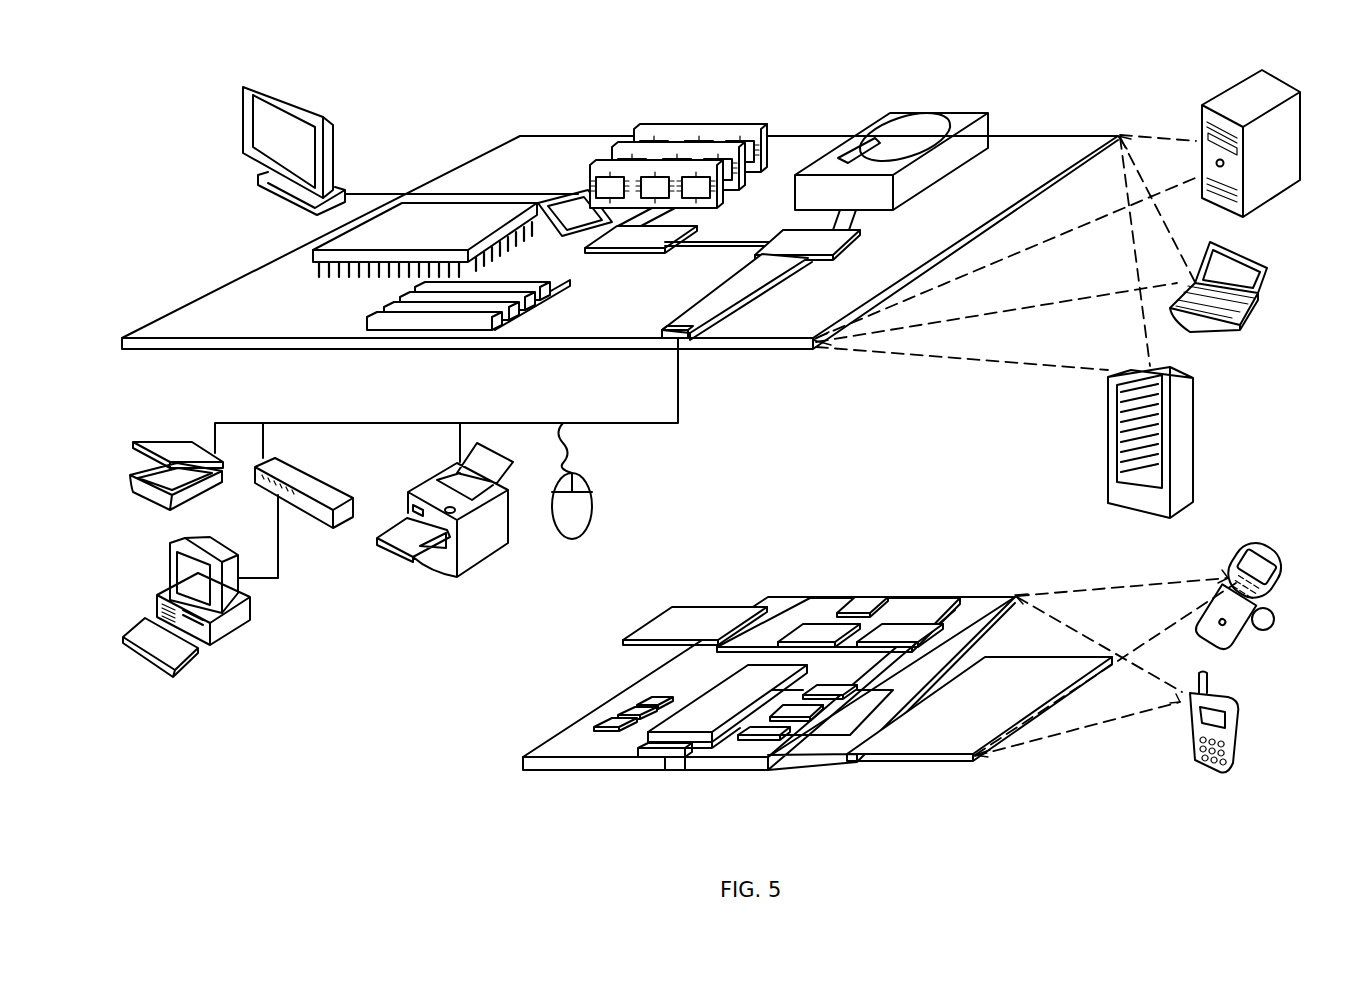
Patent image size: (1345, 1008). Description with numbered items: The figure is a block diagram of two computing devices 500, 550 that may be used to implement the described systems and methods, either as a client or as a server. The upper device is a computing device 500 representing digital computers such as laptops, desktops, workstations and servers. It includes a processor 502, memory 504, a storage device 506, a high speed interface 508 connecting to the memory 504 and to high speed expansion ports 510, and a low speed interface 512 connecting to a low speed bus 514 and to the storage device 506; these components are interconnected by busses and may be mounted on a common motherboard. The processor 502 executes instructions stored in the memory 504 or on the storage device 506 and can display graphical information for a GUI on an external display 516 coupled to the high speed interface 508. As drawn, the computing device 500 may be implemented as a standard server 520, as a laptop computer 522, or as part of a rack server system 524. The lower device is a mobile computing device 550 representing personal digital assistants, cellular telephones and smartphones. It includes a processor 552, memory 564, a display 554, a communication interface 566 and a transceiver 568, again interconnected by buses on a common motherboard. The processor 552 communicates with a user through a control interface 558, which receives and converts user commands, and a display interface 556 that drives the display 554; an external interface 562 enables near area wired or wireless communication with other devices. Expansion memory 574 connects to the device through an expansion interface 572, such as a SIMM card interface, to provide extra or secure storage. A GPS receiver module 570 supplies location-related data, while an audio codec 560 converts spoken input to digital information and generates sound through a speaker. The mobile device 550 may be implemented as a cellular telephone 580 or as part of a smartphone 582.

The computing device 500 is at (442, 104).
The processor 502 is at (318, 256).
The memory 504 is at (652, 129).
The storage device 506 is at (880, 118).
The high speed interface 508 is at (618, 235).
The high speed expansion ports 510 is at (392, 312).
The low speed interface 512 is at (792, 239).
The low speed bus 514 is at (690, 339).
The display 516 is at (247, 80).
The standard server 520 is at (1202, 118).
The laptop computer 522 is at (1268, 262).
The rack server system 524 is at (1106, 467).
The computing device 550 is at (503, 768).
The processor 552 is at (700, 727).
The display 554 is at (944, 742).
The display interface 556 is at (767, 735).
The control interface 558 is at (802, 712).
The audio codec 560 is at (830, 690).
The external interface 562 is at (670, 757).
The memory 564 is at (618, 725).
The communication interface 566 is at (820, 629).
The transceiver 568 is at (900, 631).
The GPS receiver module 570 is at (868, 603).
The expansion interface 572 is at (753, 608).
The expansion memory 574 is at (674, 611).
The cellular telephone 580 is at (1235, 559).
The smartphone 582 is at (1190, 717).